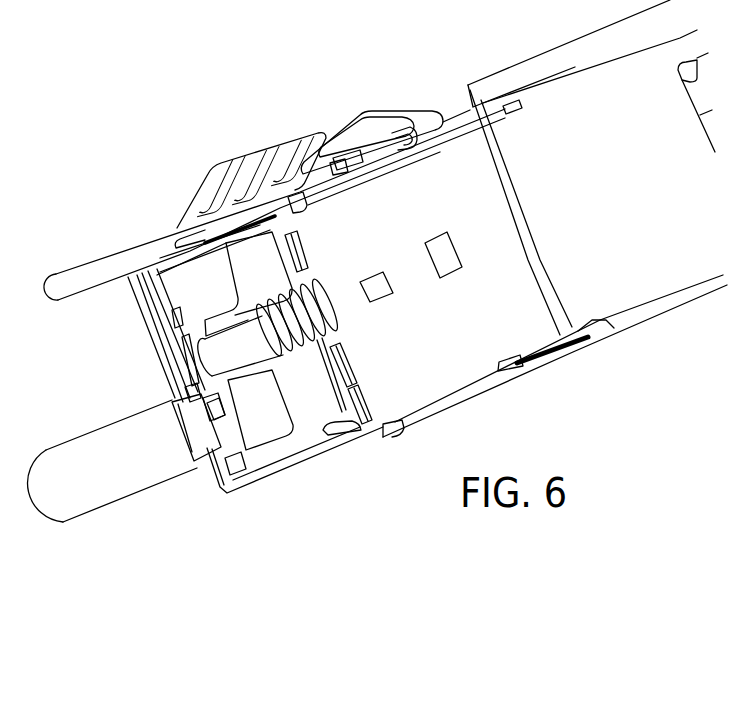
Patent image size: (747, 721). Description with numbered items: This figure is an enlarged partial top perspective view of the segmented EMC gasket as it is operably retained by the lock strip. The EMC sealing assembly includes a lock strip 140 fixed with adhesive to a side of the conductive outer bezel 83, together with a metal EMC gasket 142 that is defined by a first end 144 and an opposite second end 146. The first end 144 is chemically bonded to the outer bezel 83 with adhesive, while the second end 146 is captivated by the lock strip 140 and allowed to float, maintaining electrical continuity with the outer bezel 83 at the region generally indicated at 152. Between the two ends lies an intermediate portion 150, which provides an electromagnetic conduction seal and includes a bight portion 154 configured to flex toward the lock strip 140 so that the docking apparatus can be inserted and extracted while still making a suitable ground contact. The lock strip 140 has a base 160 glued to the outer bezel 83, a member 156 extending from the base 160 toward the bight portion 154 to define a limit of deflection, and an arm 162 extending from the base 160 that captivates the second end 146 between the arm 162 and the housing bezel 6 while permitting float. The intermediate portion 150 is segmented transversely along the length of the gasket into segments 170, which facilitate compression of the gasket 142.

The housing bezel 6 is at (510, 327).
The outer bezel 83 is at (320, 463).
The lock strip 140 is at (390, 150).
The metal EMC gasket 142 is at (212, 168).
The first end 144 is at (497, 124).
The second end 146 is at (337, 176).
The intermediate portion 150 is at (300, 133).
The electrical continuity 152 is at (440, 130).
The bight portion 154 is at (372, 110).
The member 156 is at (397, 110).
The base 160 is at (405, 152).
The arm 162 is at (333, 156).
The segments 170 is at (200, 197).